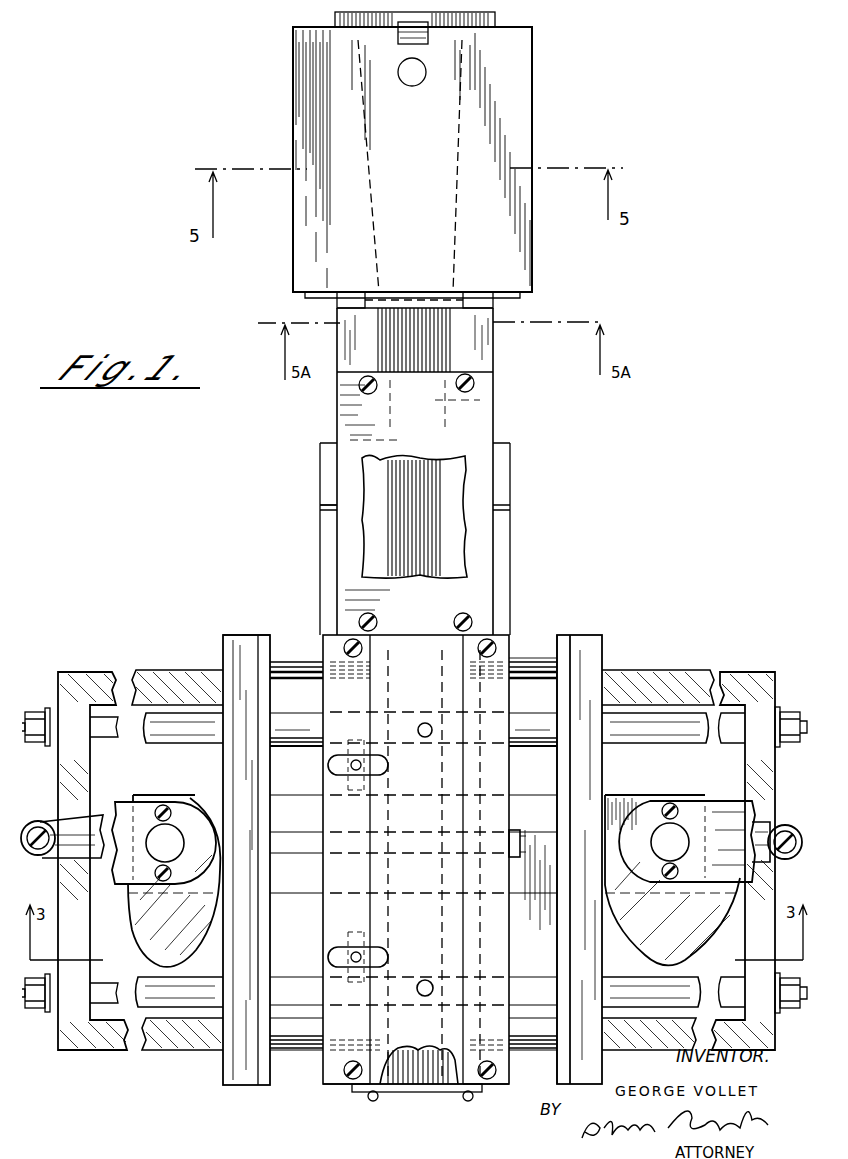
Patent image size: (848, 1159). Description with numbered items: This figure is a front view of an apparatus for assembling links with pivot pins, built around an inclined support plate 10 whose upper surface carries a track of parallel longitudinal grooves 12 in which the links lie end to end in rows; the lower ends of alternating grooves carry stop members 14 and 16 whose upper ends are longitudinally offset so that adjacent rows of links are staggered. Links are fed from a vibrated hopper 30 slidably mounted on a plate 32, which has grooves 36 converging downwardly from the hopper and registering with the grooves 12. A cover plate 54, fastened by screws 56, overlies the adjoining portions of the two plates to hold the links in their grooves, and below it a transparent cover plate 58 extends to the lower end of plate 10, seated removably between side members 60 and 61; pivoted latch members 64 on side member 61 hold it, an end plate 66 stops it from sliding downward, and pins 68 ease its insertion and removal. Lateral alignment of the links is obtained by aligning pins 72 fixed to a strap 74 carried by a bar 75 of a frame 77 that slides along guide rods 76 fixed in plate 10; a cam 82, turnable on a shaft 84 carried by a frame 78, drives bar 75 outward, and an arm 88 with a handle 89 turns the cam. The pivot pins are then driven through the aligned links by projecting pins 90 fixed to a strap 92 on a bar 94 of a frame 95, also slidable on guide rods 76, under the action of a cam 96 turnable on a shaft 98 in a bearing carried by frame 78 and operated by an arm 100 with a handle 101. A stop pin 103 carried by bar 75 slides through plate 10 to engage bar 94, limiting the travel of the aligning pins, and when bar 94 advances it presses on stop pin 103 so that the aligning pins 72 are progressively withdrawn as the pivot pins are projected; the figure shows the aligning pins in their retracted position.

The plate 10 is at (308, 526).
The longitudinal grooves 12 is at (442, 575).
The stop member 14 is at (410, 1085).
The stop member 16 is at (402, 1085).
The hopper 30 is at (546, 114).
The plate 32 is at (513, 360).
The grooves 36 is at (390, 348).
The cover plate 54 is at (498, 490).
The screws 56 is at (478, 384).
The transparent cover plate 58 is at (462, 706).
The side member 60 is at (500, 1075).
The side member 61 is at (335, 1075).
The pivoted latch members 64 is at (330, 767).
The end plate 66 is at (358, 1095).
The pins 68 is at (421, 736).
The aligning pins 72 is at (301, 672).
The strap 74 is at (246, 640).
The bar 75 is at (240, 1088).
The guide rods 76 is at (170, 722).
The frame 77 is at (82, 658).
The frame 78 is at (537, 907).
The cam 82 is at (148, 938).
The shaft 84 is at (170, 840).
The arm 88 is at (105, 822).
The handle 89 is at (35, 820).
The projecting pins 90 is at (522, 662).
The strap 92 is at (565, 658).
The bar 94 is at (592, 670).
The frame 95 is at (760, 665).
The cam 96 is at (645, 945).
The shaft 98 is at (666, 838).
The arm 100 is at (756, 820).
The handle 101 is at (788, 825).
The stop pin 103 is at (514, 830).